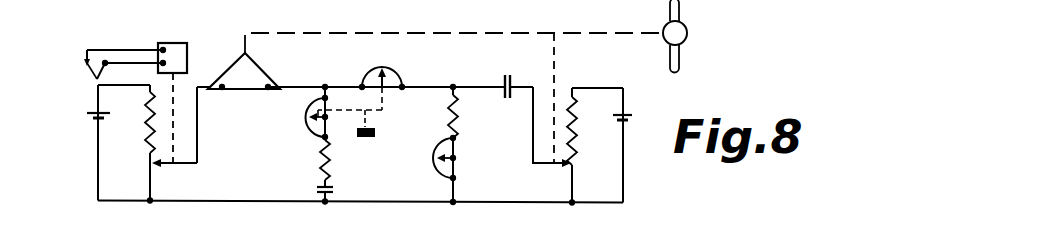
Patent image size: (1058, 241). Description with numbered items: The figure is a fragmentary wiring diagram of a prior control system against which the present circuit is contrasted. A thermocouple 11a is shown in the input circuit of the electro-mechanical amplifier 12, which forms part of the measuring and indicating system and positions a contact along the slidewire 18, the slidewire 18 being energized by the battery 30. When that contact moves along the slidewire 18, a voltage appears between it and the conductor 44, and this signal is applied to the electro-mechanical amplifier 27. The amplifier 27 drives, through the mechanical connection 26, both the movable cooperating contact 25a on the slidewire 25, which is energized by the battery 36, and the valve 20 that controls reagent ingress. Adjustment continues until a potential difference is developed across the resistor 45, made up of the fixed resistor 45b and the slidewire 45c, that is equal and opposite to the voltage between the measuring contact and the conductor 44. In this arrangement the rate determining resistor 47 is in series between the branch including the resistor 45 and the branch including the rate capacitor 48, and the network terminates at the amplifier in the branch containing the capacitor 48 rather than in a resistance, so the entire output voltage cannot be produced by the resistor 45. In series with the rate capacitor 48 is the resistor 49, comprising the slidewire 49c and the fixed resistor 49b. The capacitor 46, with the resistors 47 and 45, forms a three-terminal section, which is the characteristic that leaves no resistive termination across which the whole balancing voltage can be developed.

The thermocouple 11a is at (97, 79).
The electro-mechanical amplifier 12 is at (187, 57).
The slidewire 18 is at (147, 148).
The valve 20 is at (687, 27).
The slidewire 25 is at (580, 130).
The movable cooperating contact 25a is at (558, 167).
The mechanical connection 26 is at (417, 32).
The electro-mechanical amplifier 27 is at (235, 87).
The battery 30 is at (88, 116).
The battery 36 is at (628, 118).
The conductor 44 is at (468, 202).
The resistor 45 is at (421, 160).
The fixed resistor 45b is at (449, 118).
The slidewire 45c is at (436, 158).
The capacitor 46 is at (513, 75).
The rate determining resistor 47 is at (395, 73).
The rate capacitor 48 is at (336, 188).
The resistor 49 is at (366, 170).
The fixed resistor 49b is at (320, 165).
The slidewire 49c is at (301, 114).